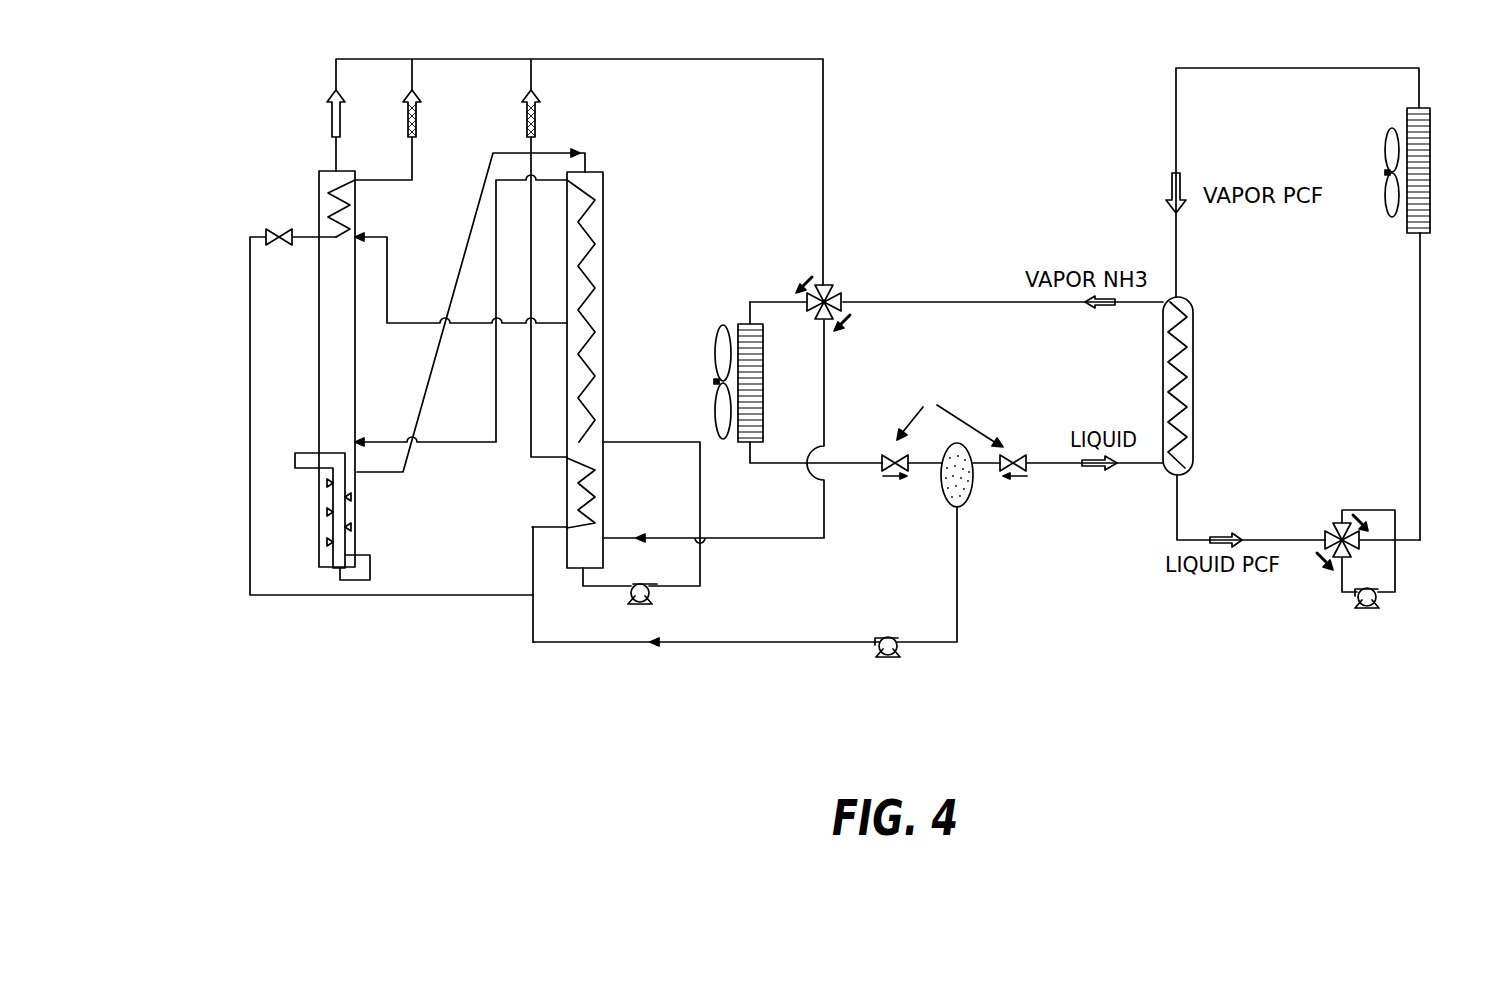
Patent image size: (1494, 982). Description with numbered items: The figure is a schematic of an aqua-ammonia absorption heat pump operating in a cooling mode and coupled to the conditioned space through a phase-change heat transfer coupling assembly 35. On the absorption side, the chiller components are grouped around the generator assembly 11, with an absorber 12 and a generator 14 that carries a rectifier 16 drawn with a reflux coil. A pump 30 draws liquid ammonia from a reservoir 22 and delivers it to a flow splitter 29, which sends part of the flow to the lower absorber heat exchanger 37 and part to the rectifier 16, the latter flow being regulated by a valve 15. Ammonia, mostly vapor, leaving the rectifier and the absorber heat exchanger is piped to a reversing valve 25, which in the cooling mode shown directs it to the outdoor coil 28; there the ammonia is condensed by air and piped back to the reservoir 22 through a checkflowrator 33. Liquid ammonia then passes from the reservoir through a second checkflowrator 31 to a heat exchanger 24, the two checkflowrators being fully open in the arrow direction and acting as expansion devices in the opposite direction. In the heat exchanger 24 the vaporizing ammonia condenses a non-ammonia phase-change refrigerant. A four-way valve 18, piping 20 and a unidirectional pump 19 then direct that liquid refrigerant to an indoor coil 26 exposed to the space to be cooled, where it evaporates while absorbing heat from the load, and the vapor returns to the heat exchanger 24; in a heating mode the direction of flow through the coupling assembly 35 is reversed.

The generator assembly 11 is at (230, 386).
The absorber 12 is at (603, 320).
The generator 14 is at (357, 350).
The valve 15 is at (266, 233).
The rectifier 16 is at (319, 190).
The four-way valve 18 is at (1333, 530).
The unidirectional pump 19 is at (1380, 598).
The piping 20 is at (1360, 510).
The reservoir 22 is at (950, 505).
The heat exchanger 24 is at (1193, 415).
The reversing valve 25 is at (838, 294).
The indoor coil 26 is at (1425, 108).
The outdoor coil 28 is at (747, 445).
The flow splitter 29 is at (530, 597).
The pump 30 is at (885, 657).
The checkflowrator 31 is at (1013, 452).
The checkflowrator 33 is at (893, 454).
The phase-change heat transfer coupling assembly 35 is at (1130, 180).
The lower absorber heat exchanger 37 is at (570, 510).